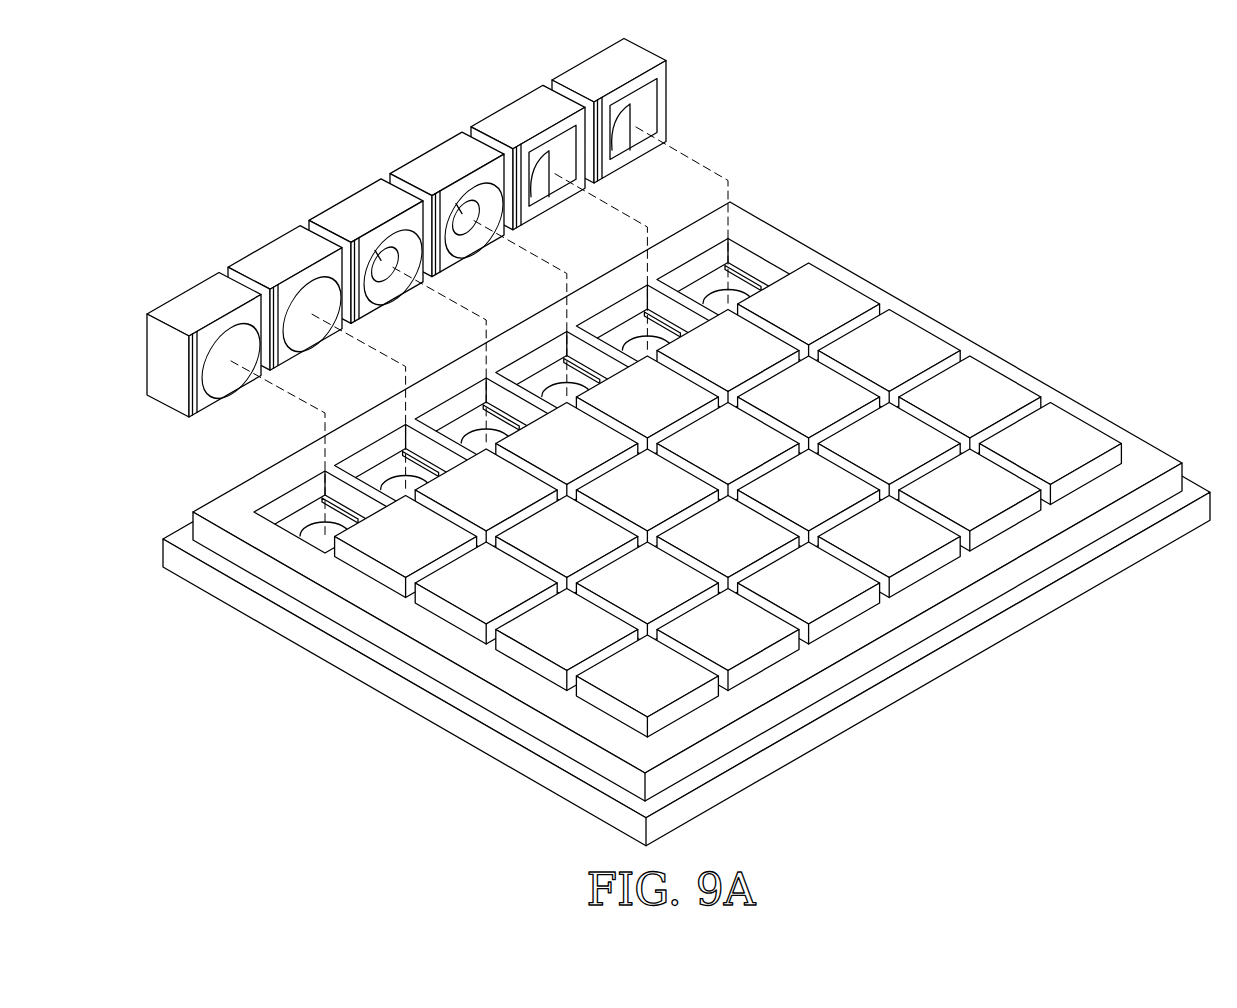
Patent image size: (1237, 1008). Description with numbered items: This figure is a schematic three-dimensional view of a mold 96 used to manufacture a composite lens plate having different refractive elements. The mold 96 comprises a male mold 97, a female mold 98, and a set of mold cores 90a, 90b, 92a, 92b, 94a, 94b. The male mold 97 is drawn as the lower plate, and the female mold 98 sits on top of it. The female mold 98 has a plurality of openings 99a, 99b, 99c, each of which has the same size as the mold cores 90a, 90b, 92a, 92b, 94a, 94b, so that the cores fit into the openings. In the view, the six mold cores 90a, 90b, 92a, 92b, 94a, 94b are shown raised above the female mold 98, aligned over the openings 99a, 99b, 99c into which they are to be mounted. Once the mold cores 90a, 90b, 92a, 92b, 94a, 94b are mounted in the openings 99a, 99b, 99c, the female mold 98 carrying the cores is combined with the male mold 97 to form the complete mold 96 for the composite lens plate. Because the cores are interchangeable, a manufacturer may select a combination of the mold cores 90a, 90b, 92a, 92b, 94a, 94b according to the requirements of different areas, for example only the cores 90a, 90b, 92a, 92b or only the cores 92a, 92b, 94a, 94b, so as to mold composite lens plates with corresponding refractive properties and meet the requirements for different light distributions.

The mold core 90a is at (198, 298).
The mold core 90b is at (280, 253).
The mold core 92a is at (359, 209).
The mold core 92b is at (440, 163).
The mold core 94a is at (523, 117).
The mold core 94b is at (602, 72).
The mold 96 is at (1035, 149).
The male mold 97 is at (1047, 603).
The female mold 98 is at (223, 508).
The opening 99a is at (292, 491).
The opening 99b is at (458, 402).
The opening 99c is at (614, 310).